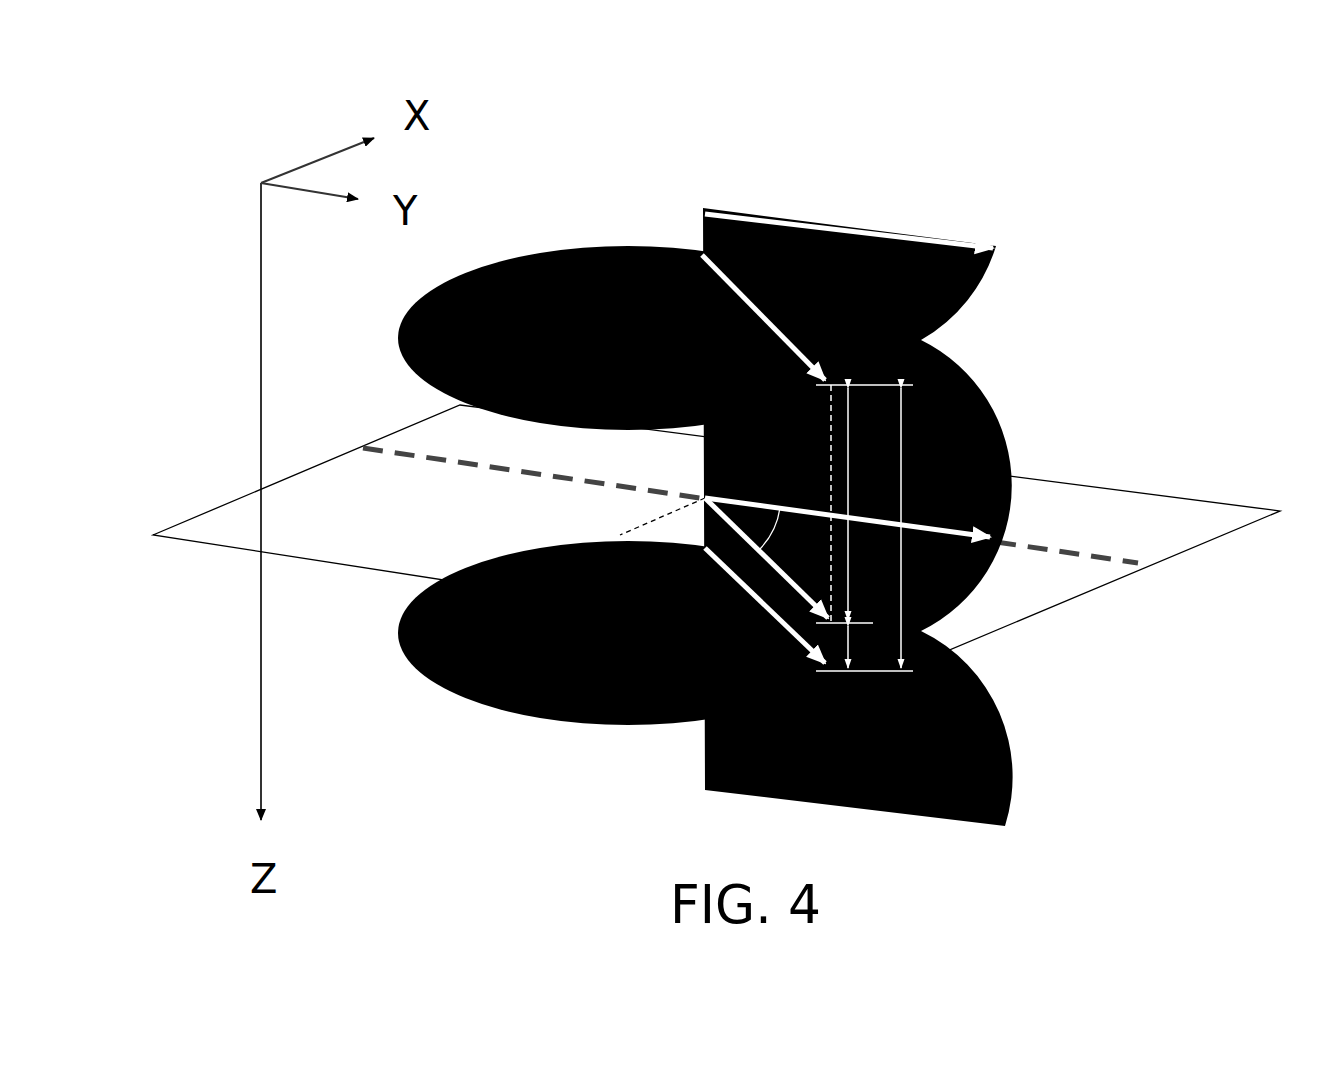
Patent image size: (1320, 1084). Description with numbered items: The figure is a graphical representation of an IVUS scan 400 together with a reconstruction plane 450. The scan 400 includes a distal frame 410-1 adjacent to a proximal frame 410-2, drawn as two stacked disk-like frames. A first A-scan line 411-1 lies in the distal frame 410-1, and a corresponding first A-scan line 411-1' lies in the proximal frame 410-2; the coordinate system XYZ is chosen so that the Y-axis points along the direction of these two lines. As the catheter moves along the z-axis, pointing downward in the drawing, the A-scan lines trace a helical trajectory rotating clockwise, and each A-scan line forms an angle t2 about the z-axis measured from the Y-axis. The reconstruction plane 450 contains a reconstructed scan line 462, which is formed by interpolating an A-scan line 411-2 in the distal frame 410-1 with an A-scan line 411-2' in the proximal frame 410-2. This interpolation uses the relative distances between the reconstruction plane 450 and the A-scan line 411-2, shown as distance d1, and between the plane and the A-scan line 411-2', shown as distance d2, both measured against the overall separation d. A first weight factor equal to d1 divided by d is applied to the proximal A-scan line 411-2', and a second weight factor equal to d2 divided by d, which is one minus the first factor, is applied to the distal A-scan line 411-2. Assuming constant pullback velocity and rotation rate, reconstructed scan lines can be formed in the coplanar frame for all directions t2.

The IVUS scan 400 is at (943, 153).
The distal frame 410-1 is at (552, 352).
The proximal frame 410-2 is at (552, 668).
The first A-scan line 411-1 is at (849, 205).
The A-scan line 411-2 is at (776, 317).
The first A-scan line 411-1' is at (847, 474).
The A-scan line 411-2' is at (736, 614).
The reconstructed scan line 462 is at (812, 555).
The reconstruction plane 450 is at (411, 523).
The distance d is at (918, 528).
The relative distance d1 is at (869, 504).
The relative distance d2 is at (869, 648).
The angle t2 is at (754, 523).